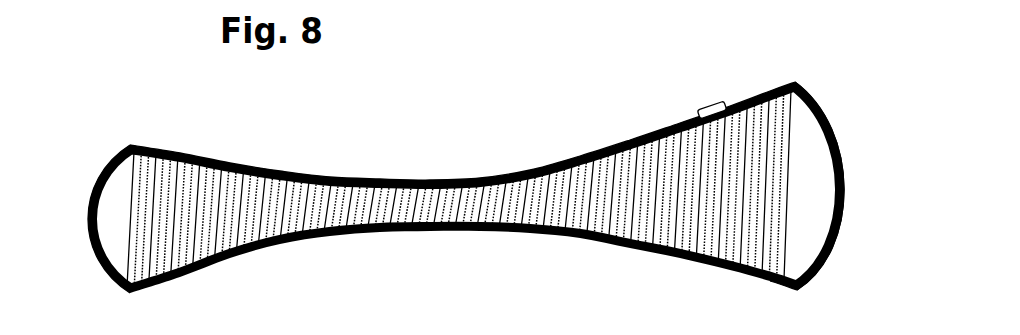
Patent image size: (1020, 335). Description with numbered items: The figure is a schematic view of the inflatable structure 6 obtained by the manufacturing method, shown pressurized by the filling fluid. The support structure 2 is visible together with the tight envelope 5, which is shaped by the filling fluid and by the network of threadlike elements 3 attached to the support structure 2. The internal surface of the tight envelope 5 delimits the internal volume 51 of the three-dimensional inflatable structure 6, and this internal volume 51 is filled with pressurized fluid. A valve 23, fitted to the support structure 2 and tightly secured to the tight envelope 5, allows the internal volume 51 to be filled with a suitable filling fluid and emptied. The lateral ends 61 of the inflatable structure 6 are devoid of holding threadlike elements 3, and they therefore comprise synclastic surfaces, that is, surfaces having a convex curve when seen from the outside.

The support structure 2 is at (199, 186).
The network of threadlike elements 3 is at (671, 235).
The tight envelope 5 is at (318, 162).
The internal volume 51 is at (549, 191).
The inflatable structure 6 is at (836, 98).
The lateral ends 61 is at (79, 197).
The valve 23 is at (685, 100).